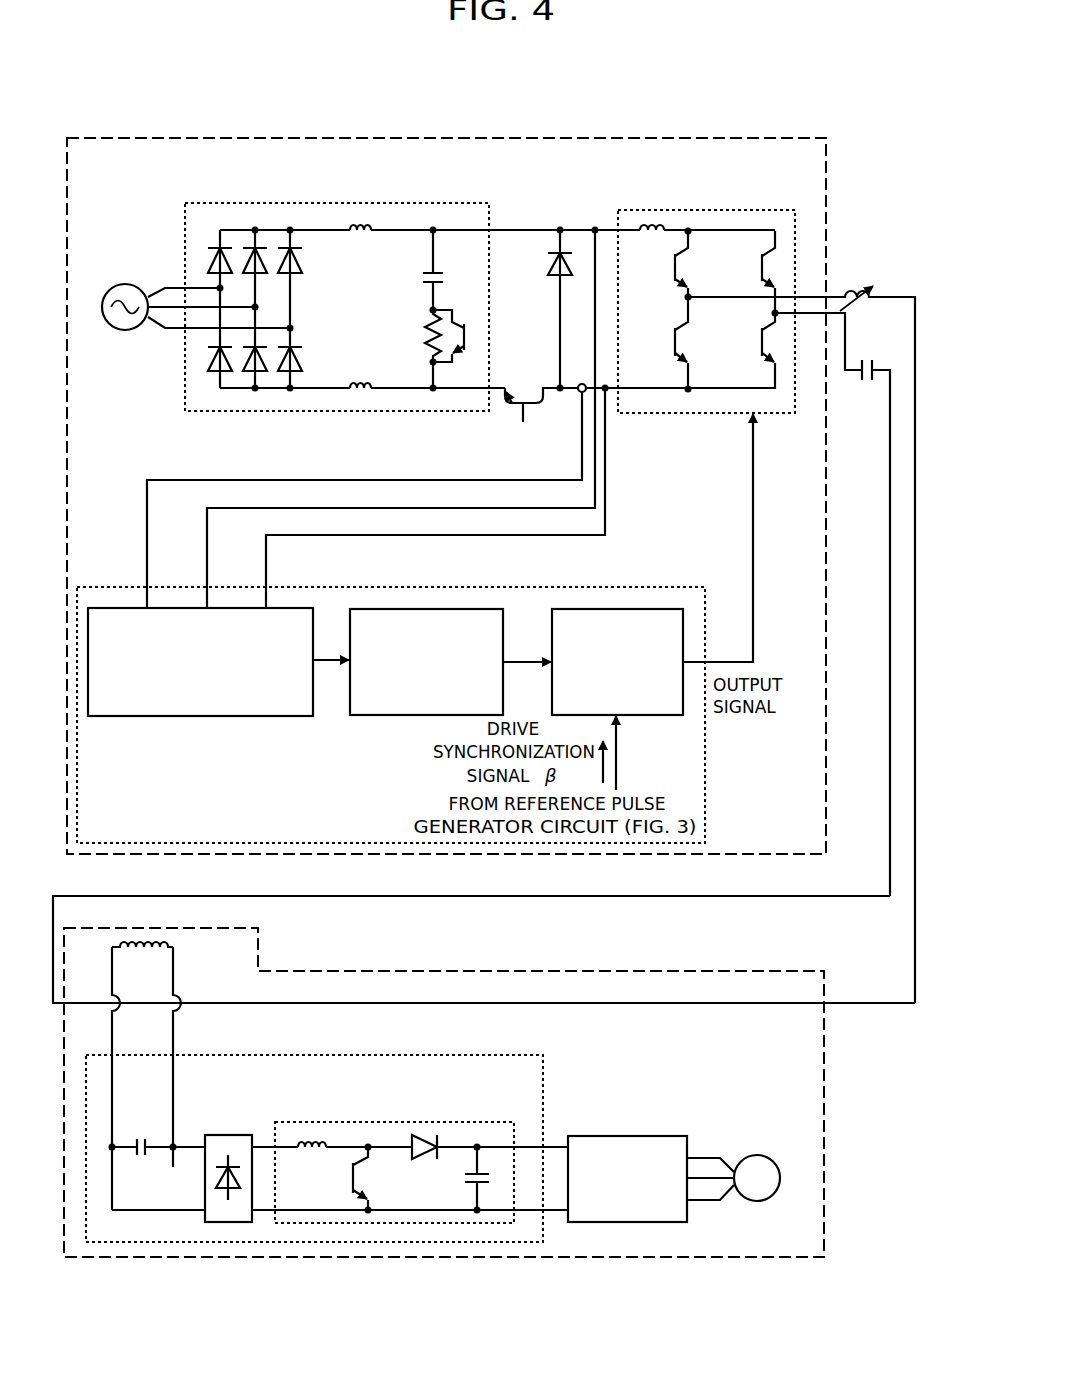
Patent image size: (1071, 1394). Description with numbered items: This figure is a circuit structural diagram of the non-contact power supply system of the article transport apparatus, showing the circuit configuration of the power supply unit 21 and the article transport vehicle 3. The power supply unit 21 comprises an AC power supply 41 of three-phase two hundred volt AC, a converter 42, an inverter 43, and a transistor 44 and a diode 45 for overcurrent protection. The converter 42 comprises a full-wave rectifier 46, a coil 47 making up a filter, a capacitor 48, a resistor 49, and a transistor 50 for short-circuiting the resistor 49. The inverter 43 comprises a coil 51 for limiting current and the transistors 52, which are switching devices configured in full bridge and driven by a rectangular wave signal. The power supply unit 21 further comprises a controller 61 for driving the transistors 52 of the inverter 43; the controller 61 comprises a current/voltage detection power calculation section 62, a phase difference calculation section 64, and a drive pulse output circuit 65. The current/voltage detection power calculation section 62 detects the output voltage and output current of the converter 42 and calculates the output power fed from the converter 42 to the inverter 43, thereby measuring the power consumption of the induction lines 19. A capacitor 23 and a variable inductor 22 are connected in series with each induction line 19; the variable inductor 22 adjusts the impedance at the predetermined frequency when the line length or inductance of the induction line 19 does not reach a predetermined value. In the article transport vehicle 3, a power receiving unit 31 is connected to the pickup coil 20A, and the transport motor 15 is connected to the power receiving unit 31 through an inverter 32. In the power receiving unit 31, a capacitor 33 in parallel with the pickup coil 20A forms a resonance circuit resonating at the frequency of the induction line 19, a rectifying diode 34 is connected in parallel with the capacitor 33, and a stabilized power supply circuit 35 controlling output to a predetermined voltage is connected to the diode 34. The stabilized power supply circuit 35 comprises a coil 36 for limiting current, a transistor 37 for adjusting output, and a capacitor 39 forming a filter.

The power supply unit 21 is at (565, 138).
The converter 42 is at (290, 203).
The AC power supply 41 is at (121, 285).
The full-wave rectifier 46 is at (300, 298).
The coil 47 is at (361, 238).
The capacitor 48 is at (425, 280).
The resistor 49 is at (425, 346).
The transistor 50 is at (470, 334).
The transistor 44 is at (523, 400).
The diode 45 is at (548, 270).
The inverter 43 is at (668, 210).
The coil 51 is at (647, 226).
The transistors 52 is at (674, 336).
The variable inductor 22 is at (857, 285).
The capacitor 23 is at (866, 384).
The controller 61 is at (642, 587).
The current/voltage detection power calculation section 62 is at (223, 703).
The phase difference calculation section 64 is at (405, 710).
The drive pulse output circuit 65 is at (647, 715).
The induction line 19 is at (360, 897).
The article transport vehicle 3 is at (467, 971).
The pickup coil 20A is at (175, 950).
The power receiving unit 31 is at (543, 1077).
The capacitor 33 is at (139, 1137).
The rectifying diode 34 is at (212, 1170).
The stabilized power supply circuit 35 is at (327, 1122).
The coil 36 is at (300, 1140).
The transistor 37 is at (351, 1175).
The capacitor 39 is at (470, 1178).
The inverter 32 is at (657, 1136).
The transport motor 15 is at (757, 1155).